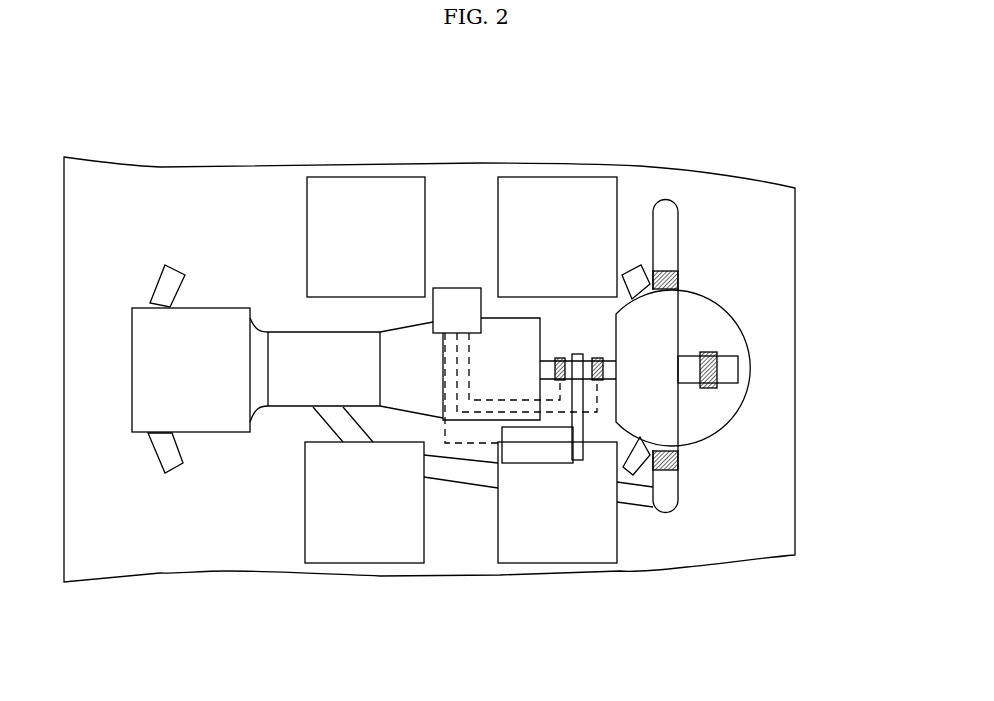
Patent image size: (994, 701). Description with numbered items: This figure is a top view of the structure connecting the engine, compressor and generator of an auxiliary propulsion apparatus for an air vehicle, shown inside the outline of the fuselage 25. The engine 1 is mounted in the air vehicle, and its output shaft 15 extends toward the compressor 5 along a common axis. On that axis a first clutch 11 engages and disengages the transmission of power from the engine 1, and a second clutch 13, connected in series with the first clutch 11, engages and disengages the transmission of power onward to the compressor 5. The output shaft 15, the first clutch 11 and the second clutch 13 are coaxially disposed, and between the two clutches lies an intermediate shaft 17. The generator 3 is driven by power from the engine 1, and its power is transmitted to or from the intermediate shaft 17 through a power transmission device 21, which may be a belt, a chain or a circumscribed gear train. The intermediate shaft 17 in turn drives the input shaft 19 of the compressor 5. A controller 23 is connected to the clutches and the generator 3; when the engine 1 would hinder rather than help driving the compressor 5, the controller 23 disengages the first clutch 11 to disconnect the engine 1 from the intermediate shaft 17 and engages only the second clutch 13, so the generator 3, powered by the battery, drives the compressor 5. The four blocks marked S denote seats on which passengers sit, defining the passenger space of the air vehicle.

The engine 1 is at (289, 345).
The generator 3 is at (538, 455).
The compressor 5 is at (658, 315).
The first clutch 11 is at (560, 357).
The second clutch 13 is at (590, 360).
The output shaft 15 is at (547, 362).
The intermediate shaft 17 is at (590, 357).
The input shaft 19 is at (610, 368).
The power transmission device 21 is at (612, 425).
The controller 23 is at (448, 297).
The fuselage 25 is at (160, 555).
The seats S is at (362, 547).